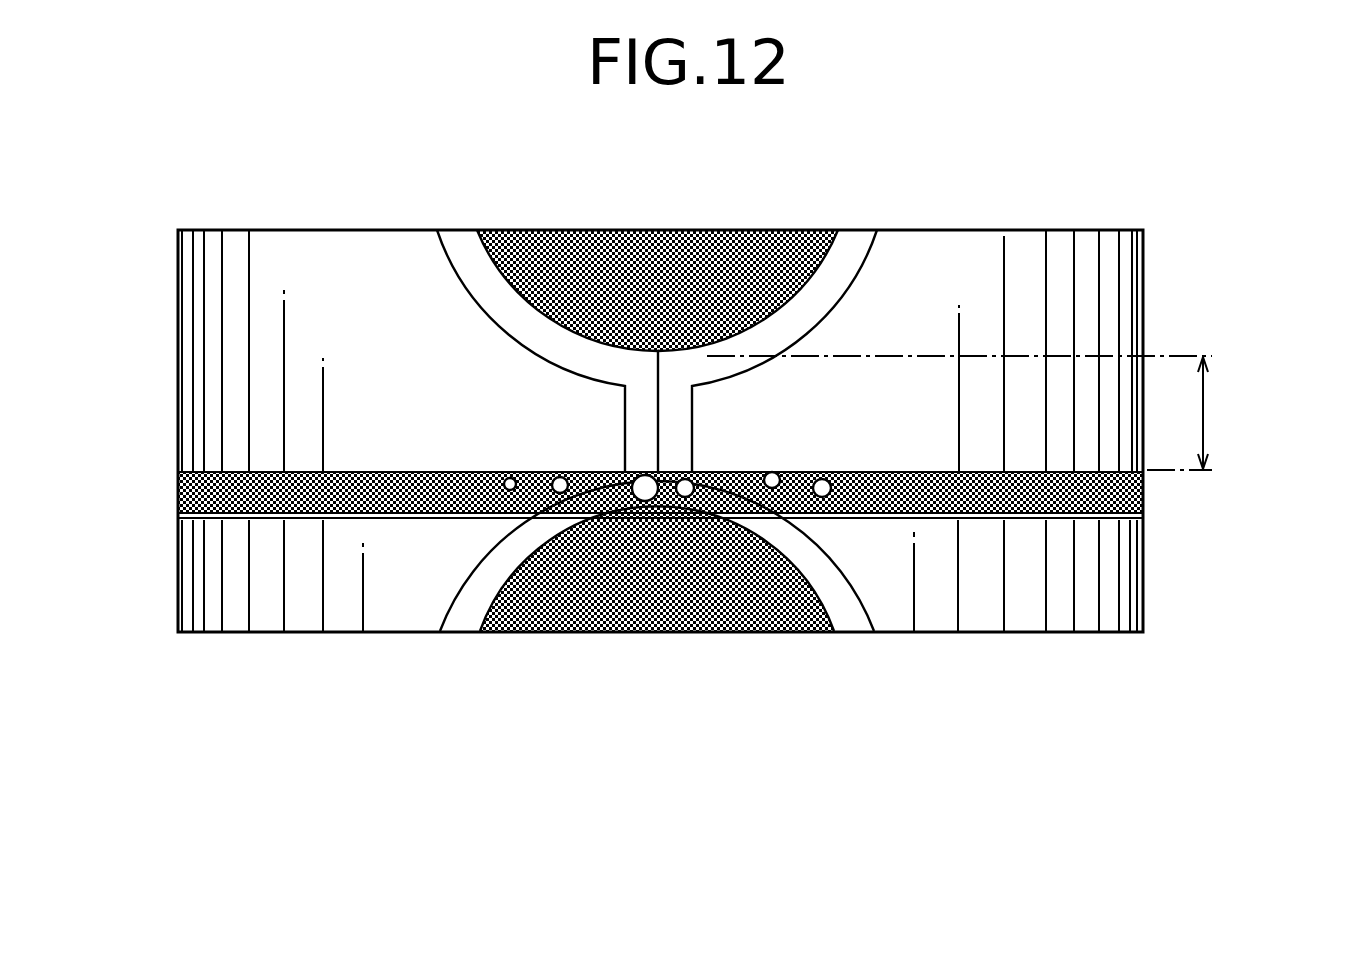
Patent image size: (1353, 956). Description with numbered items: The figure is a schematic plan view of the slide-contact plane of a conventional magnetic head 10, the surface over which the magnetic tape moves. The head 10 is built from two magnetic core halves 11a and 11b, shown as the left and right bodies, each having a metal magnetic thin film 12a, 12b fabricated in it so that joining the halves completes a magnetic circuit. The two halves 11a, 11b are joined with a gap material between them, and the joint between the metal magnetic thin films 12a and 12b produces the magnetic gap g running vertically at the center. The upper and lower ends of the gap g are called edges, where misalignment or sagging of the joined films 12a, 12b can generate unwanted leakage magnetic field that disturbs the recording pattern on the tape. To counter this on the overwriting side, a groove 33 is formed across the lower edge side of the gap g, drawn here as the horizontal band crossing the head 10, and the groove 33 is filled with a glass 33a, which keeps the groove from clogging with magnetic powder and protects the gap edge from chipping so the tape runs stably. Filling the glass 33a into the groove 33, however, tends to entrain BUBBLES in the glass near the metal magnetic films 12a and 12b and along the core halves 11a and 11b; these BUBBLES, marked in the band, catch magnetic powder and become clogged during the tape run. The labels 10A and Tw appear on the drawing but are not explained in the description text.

The magnetic head 10 is at (1253, 206).
The substrate 10A is at (1086, 230).
The magnetic core half 11a is at (1128, 578).
The magnetic core half 11b is at (206, 586).
The metal magnetic thin film 12a is at (848, 243).
The metal magnetic thin film 12b is at (472, 242).
The magnetic gap g is at (662, 383).
The groove 33 is at (967, 508).
The glass 33a is at (1141, 496).
The wall thickness Tw is at (981, 413).
The bubbles BUBBLES is at (643, 475).